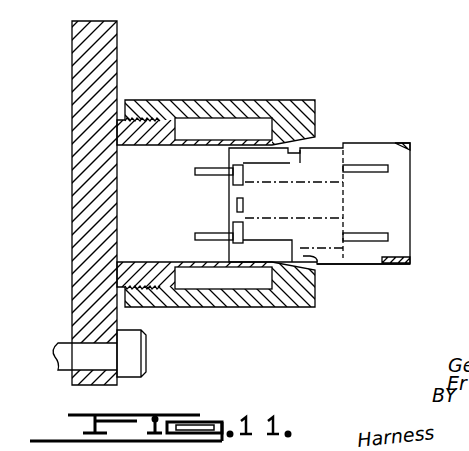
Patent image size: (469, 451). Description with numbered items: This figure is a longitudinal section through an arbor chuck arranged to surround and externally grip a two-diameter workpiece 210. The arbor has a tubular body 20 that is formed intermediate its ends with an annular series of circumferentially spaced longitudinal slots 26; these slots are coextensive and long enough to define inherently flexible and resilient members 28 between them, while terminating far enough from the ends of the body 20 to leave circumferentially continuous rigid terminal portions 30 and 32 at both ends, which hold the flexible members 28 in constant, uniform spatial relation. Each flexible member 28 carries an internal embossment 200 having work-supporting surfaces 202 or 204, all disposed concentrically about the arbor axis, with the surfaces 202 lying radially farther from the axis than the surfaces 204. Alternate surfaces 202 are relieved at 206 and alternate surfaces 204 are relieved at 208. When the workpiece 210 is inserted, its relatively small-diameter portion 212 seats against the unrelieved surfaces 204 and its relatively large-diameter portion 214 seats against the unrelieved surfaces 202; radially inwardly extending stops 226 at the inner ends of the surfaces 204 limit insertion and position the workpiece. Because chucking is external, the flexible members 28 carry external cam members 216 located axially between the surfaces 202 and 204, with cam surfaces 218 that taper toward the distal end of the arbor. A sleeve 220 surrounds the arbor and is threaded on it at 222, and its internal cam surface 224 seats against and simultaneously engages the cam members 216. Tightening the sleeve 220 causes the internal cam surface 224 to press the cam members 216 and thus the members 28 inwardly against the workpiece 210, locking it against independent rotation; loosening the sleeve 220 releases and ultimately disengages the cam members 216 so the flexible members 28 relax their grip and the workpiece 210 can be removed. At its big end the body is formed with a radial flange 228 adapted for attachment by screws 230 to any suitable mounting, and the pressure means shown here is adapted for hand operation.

The tubular body 20 is at (393, 272).
The longitudinal slots 26 is at (207, 234).
The flexible members 28 is at (382, 158).
The rigid terminal portion 30 is at (413, 139).
The rigid terminal portion 32 is at (182, 128).
The internal embossments 200 is at (266, 142).
The work-supporting surfaces 202 is at (327, 157).
The work-supporting surfaces 204 is at (273, 240).
The relief 206 is at (345, 232).
The relief 208 is at (243, 164).
The workpiece 210 is at (340, 182).
The small-diameter portion 212 is at (238, 180).
The large-diameter portion 214 is at (376, 142).
The external cam members 216 is at (277, 271).
The cam surfaces 218 is at (276, 301).
The sleeve 220 is at (234, 100).
The threaded connection 222 is at (147, 119).
The internal cam surface 224 is at (318, 265).
The stops 226 is at (230, 245).
The radial flange 228 is at (108, 39).
The screws 230 is at (132, 344).